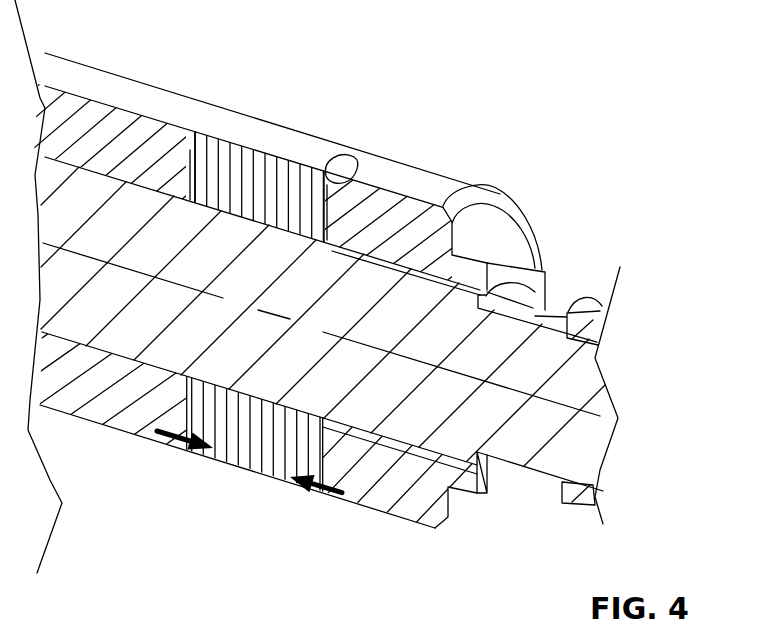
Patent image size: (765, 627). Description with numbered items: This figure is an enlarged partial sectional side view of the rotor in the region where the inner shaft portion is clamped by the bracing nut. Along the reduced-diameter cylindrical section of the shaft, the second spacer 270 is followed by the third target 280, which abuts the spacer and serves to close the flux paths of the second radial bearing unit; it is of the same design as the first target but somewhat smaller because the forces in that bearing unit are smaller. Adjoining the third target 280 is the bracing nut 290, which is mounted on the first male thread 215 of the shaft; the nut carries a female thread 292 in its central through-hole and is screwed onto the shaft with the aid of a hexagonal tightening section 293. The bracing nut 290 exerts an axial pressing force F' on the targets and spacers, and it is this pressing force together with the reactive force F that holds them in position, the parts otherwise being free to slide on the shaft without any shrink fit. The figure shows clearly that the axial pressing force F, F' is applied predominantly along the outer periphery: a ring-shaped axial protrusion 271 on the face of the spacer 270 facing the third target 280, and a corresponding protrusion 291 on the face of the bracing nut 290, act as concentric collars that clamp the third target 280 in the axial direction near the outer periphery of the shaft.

The second spacer 270 is at (83, 397).
The protrusion 271 is at (193, 150).
The third target 280 is at (232, 448).
The bracing nut 290 is at (365, 488).
The protrusion 291 is at (338, 186).
The female thread 292 is at (387, 260).
The hexagonal tightening section 293 is at (502, 263).
The first male thread 215 is at (428, 451).
The reactive force F is at (174, 514).
The axial pressing force F' is at (311, 537).